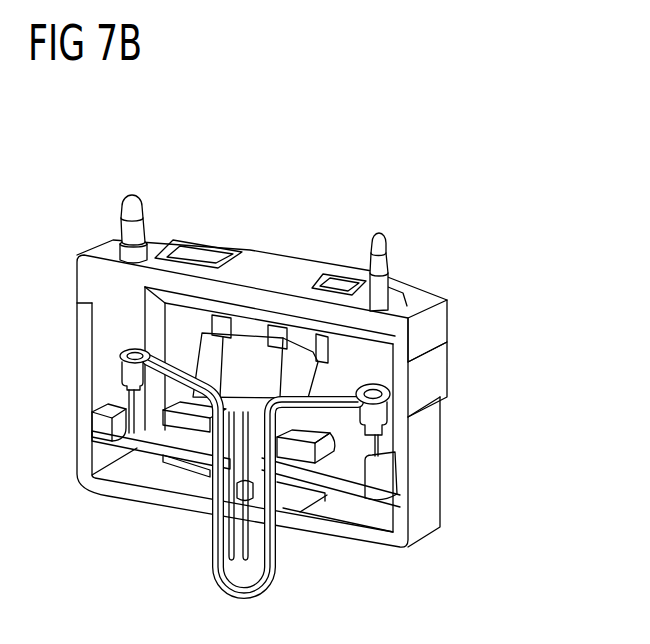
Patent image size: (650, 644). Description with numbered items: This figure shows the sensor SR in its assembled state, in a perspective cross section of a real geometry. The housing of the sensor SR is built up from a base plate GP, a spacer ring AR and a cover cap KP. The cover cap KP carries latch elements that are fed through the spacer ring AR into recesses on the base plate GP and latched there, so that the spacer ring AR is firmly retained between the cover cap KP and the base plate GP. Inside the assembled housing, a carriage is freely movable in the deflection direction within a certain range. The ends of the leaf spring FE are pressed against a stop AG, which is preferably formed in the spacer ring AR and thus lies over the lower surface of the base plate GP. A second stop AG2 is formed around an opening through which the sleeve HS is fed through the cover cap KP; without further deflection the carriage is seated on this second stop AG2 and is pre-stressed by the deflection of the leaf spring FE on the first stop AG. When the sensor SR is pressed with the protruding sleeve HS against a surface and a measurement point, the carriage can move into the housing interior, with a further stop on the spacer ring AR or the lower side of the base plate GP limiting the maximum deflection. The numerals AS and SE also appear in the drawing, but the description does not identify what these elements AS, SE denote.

The sensor SR is at (294, 179).
The connection pin AS is at (128, 213).
The base plate GP is at (433, 320).
The spacer ring AR is at (433, 366).
The cover cap KP is at (430, 478).
The stop AG is at (100, 432).
The leaf spring FE is at (133, 453).
The sensor element SE is at (233, 550).
The second stop AG2 is at (285, 522).
The sleeve HS is at (282, 577).